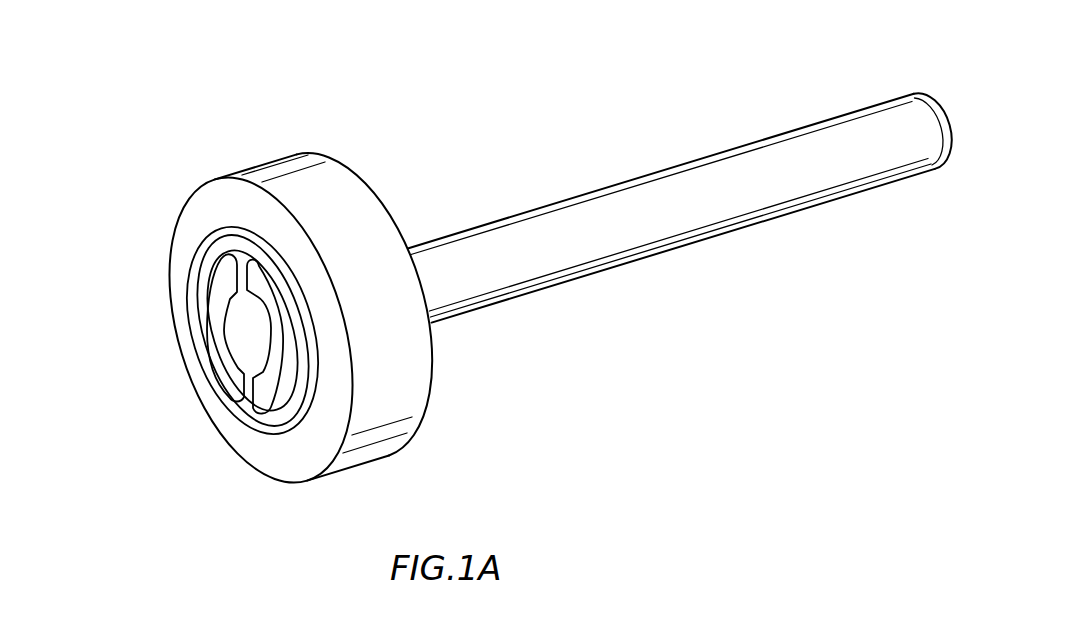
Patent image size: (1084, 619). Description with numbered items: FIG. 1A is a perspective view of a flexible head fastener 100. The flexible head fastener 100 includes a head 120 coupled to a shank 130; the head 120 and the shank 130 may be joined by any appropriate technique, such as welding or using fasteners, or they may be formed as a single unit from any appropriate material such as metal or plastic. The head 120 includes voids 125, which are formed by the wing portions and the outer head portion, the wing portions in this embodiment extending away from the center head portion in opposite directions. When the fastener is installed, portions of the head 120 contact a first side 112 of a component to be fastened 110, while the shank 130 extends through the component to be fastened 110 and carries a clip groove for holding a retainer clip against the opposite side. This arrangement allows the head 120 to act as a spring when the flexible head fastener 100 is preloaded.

The flexible head fastener 100 is at (712, 68).
The component to be fastened 110 is at (288, 168).
The first side 112 is at (220, 195).
The head 120 is at (238, 327).
The voids 125 is at (227, 283).
The shank 130 is at (573, 248).